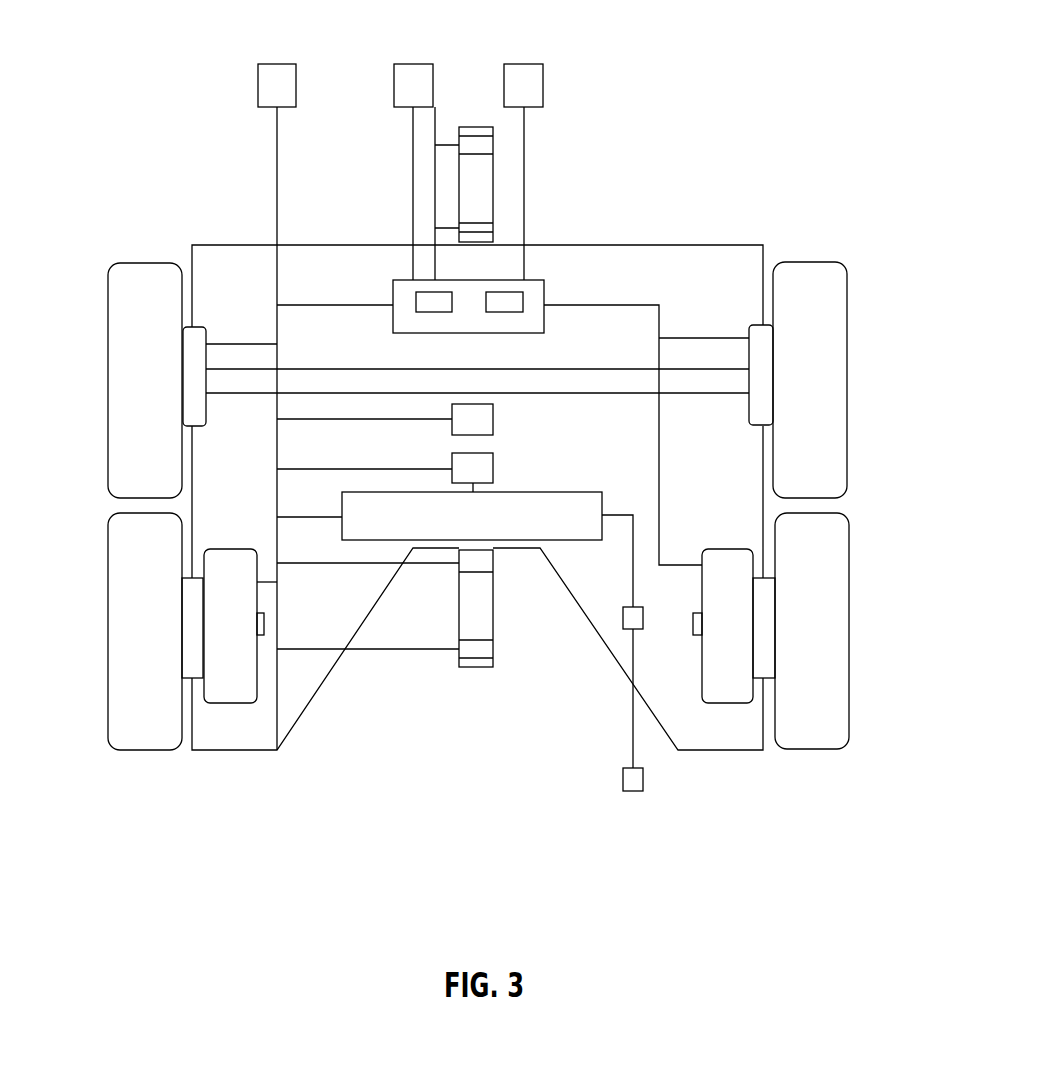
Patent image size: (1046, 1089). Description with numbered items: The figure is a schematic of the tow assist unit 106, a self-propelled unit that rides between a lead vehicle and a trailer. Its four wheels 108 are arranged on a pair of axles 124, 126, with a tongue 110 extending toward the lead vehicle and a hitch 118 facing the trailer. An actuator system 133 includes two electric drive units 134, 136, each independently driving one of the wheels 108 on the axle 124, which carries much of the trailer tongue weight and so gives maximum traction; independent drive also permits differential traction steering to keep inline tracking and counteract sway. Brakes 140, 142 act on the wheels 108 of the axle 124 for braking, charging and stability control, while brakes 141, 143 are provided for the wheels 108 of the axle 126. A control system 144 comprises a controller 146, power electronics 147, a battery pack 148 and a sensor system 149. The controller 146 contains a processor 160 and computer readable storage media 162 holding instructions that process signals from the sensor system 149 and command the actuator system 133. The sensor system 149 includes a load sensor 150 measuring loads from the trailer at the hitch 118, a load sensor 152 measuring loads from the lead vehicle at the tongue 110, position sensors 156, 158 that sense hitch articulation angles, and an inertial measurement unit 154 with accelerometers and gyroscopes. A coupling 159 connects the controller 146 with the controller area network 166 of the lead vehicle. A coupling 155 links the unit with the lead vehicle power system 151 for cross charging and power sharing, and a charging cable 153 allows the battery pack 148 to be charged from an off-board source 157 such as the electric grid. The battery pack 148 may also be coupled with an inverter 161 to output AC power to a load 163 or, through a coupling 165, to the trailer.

The tow assist unit 106 is at (498, 462).
The wheels 108 is at (168, 307).
The tongue 110 is at (471, 172).
The hitch 118 is at (422, 630).
The axle 124 is at (825, 626).
The axle 126 is at (808, 372).
The actuator system 133 is at (225, 280).
The electric drive unit 134 is at (250, 640).
The electric drive unit 136 is at (750, 640).
The brake 140 is at (190, 603).
The brake 141 is at (192, 362).
The brake 142 is at (765, 605).
The brake 143 is at (760, 360).
The control system 144 is at (481, 301).
The controller 146 is at (403, 279).
The power electronics 147 is at (484, 475).
The battery pack 148 is at (578, 533).
The sensor system 149 is at (432, 630).
The load sensor 150 is at (470, 558).
The power system 151 is at (534, 88).
The load sensor 152 is at (482, 230).
The charging cable 153 is at (275, 164).
The inertial measurement unit 154 is at (484, 430).
The coupling 155 is at (524, 178).
The position/angle sensor 156 is at (487, 655).
The off-board source 157 is at (266, 86).
The position/angle sensor 158 is at (483, 148).
The coupling 159 is at (412, 130).
The processor 160 is at (414, 302).
The inverter 161 is at (645, 618).
The computer readable storage device or media 162 is at (510, 302).
The load 163 is at (629, 779).
The coupling 165 is at (632, 742).
The controller area network 166 is at (410, 76).